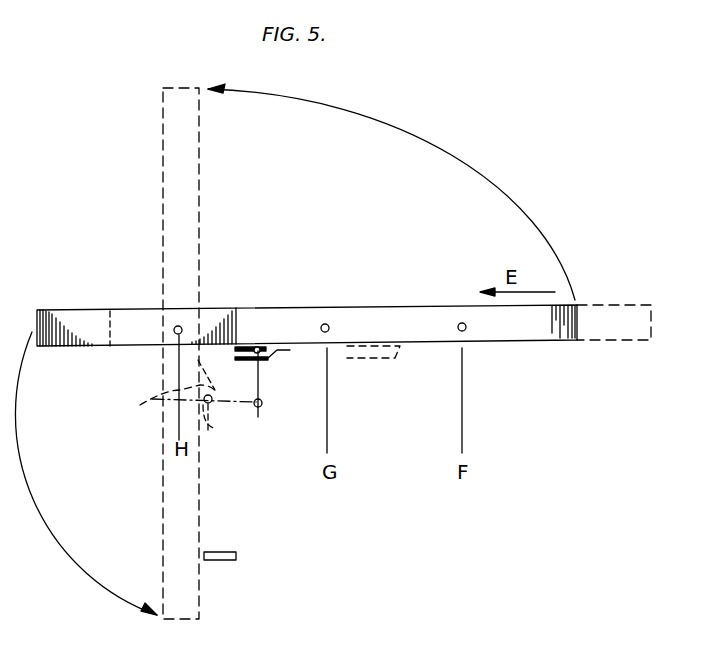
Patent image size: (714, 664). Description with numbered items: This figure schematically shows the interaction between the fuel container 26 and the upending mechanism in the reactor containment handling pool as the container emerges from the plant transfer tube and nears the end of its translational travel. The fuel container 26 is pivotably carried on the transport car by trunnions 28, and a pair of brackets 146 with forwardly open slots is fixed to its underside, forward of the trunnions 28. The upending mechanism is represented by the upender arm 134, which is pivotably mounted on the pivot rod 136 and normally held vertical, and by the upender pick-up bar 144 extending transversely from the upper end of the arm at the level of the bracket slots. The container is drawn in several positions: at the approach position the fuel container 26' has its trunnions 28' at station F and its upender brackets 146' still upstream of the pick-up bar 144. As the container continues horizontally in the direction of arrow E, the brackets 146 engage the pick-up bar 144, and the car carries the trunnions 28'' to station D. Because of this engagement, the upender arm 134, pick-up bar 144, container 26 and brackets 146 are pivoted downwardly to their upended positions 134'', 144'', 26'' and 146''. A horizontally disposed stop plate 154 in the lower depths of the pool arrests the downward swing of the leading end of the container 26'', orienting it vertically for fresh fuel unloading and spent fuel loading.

The fuel container 26 is at (307, 309).
The fuel container in approach position 26' is at (620, 298).
The fuel container in upended position 26'' is at (153, 353).
The trunnions 28 is at (349, 329).
The trunnions at approach position 28' is at (490, 328).
The trunnions at position D 28'' is at (148, 332).
The upender pick-up bar 144 is at (267, 331).
The upender pick-up bar in upended position 144'' is at (231, 428).
The brackets 146 is at (278, 366).
The upender brackets at approach position 146' is at (388, 381).
The brackets in upended position 146'' is at (165, 411).
The upender arm 134 is at (290, 384).
The upender arm in upended position 134'' is at (232, 378).
The pivot rod 136 is at (262, 407).
The stop plate 154 is at (220, 560).